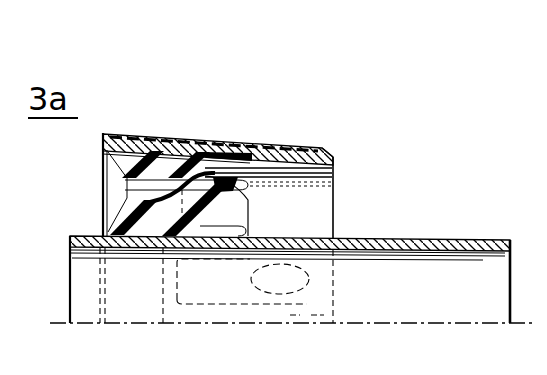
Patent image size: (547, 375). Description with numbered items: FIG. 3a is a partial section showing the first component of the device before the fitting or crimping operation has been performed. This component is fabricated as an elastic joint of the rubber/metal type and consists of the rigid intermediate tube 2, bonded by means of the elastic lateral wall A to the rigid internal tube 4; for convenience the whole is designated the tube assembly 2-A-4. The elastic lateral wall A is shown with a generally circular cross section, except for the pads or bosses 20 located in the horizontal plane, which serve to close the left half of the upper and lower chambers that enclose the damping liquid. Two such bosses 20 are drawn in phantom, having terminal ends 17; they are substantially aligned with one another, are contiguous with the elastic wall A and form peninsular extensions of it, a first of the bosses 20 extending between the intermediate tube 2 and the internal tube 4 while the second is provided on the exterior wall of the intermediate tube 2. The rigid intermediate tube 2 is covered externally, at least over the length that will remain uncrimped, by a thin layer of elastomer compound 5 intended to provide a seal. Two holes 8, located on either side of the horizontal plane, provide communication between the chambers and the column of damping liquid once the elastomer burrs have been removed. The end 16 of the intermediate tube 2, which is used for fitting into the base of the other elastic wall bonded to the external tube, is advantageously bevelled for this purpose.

The rigid intermediate tube 2 is at (252, 151).
The rigid internal tube 4 is at (103, 250).
The thin layer of elastomer compound 5 is at (157, 131).
The holes 8 is at (304, 236).
The end of the rigid intermediate tube 16 is at (340, 156).
The terminal ends 17 is at (341, 314).
The pads (or bosses) 20 is at (331, 318).
The elastic lateral wall A is at (103, 232).
The tube assembly 2-A-4 is at (222, 103).